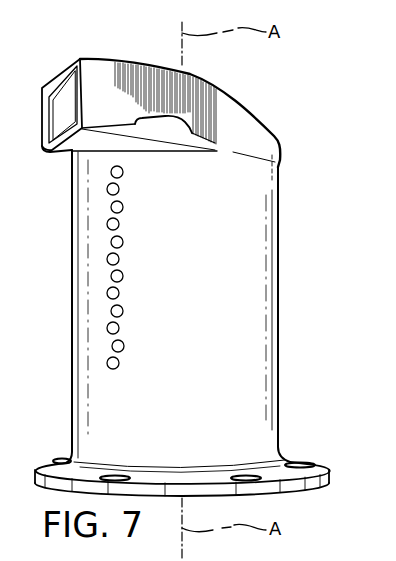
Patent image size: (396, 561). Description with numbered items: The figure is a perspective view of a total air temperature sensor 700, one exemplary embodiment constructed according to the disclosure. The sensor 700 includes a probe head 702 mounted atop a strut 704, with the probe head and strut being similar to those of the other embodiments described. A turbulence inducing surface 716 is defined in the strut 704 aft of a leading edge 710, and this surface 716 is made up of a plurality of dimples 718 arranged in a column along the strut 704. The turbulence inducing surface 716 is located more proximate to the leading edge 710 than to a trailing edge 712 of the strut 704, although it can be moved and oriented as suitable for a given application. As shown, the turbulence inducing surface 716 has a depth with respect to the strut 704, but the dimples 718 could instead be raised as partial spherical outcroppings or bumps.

The total air temperature sensor 700 is at (300, 119).
The housing 702 is at (145, 78).
The strut 704 is at (237, 295).
The leading edge 710 is at (72, 408).
The trailing edge 712 is at (281, 257).
The turbulence inducing surface 716 is at (88, 268).
The dimples 718 is at (122, 210).